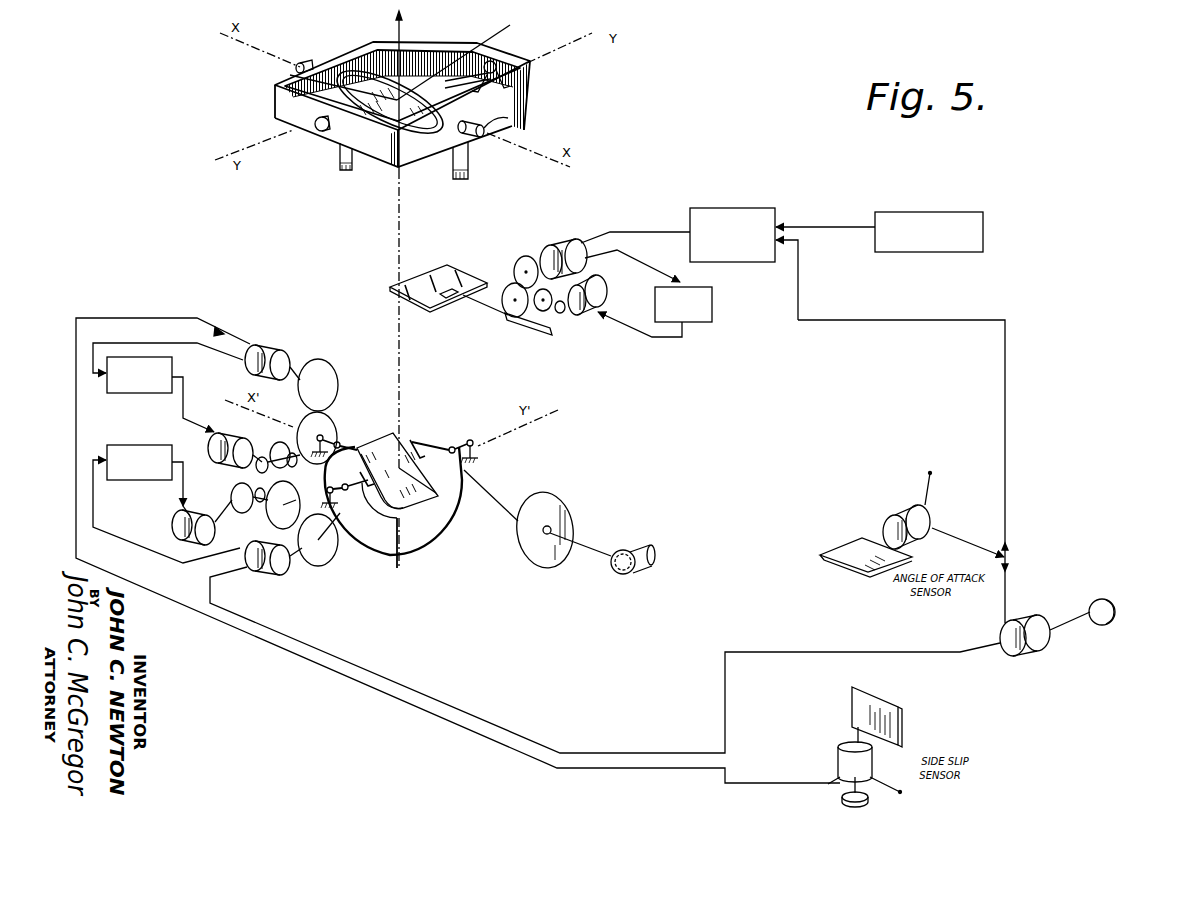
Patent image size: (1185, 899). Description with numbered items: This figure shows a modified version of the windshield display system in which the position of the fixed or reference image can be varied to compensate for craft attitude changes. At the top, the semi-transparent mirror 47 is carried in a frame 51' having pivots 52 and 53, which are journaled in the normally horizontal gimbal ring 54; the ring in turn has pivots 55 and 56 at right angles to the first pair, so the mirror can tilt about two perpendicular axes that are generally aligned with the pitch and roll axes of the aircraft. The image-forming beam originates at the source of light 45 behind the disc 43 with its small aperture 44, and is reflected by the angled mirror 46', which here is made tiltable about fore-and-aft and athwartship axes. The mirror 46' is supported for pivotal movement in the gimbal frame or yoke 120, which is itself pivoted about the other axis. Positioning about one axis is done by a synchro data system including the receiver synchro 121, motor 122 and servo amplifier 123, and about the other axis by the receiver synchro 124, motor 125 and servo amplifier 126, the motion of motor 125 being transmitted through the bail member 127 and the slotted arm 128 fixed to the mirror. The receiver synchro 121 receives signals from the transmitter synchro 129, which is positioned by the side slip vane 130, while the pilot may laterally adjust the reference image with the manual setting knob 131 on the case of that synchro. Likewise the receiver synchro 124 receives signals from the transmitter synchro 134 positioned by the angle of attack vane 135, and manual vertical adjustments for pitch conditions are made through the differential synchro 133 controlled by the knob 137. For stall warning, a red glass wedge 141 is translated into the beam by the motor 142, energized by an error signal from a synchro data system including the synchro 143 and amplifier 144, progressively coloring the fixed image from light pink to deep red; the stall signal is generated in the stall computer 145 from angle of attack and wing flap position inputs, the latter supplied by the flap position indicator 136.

The semi-transparent mirror 47 is at (357, 84).
The frame 51' is at (366, 78).
The pivot 53 is at (520, 69).
The pivot 56 is at (310, 62).
The pivot 52 is at (320, 131).
The pivot 55 is at (508, 118).
The gimbal ring 54 is at (404, 160).
The stall computer 145 is at (735, 208).
The flap position indicator 136 is at (922, 212).
The amplifier 144 is at (712, 301).
The synchro 143 is at (556, 247).
The motor 142 is at (603, 290).
The glass wedge 141 is at (460, 272).
The receiver synchro 121 is at (283, 351).
The motor 122 is at (215, 466).
The servo amplifier 123 is at (118, 393).
The receiver synchro 124 is at (268, 572).
The motor 125 is at (174, 527).
The servo amplifier 126 is at (120, 480).
The mirror 46' is at (397, 460).
The gimbal frame 120 is at (440, 443).
The bail member 127 is at (385, 560).
The slotted arm 128 is at (420, 543).
The disc 43 is at (566, 506).
The aperture 44 is at (553, 531).
The source of light 45 is at (627, 576).
The transmitter synchro 134 is at (928, 523).
The vane 135 is at (845, 540).
The differential synchro 133 is at (1030, 652).
The knob 137 is at (1116, 612).
The side slip vane 130 is at (900, 721).
The transmitter synchro 129 is at (838, 757).
The manual setting knob 131 is at (842, 798).